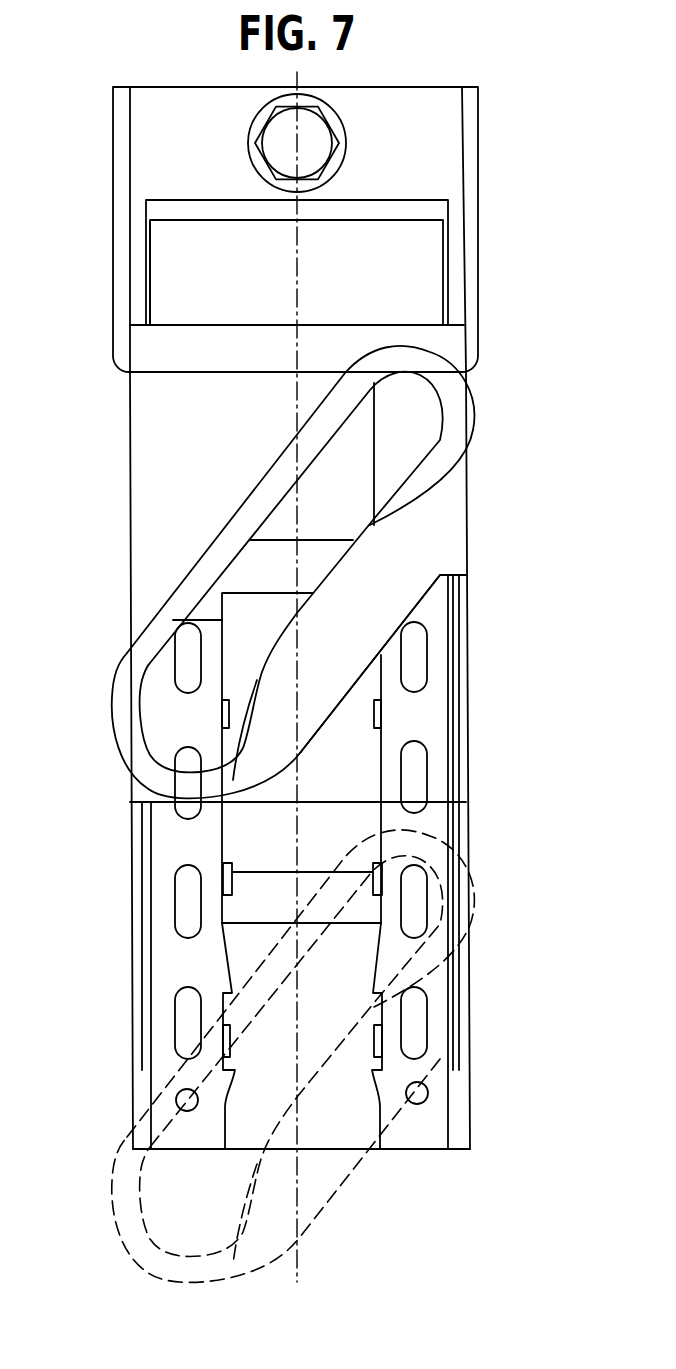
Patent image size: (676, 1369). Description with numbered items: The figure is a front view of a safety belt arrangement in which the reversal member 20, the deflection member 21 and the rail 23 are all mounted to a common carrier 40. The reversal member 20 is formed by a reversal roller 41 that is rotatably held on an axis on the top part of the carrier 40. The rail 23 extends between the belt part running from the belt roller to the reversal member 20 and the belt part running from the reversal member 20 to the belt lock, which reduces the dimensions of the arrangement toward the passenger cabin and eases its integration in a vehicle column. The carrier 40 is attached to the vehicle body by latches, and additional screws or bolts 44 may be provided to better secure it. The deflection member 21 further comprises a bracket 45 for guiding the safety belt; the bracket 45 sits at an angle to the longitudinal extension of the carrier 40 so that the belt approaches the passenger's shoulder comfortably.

The reversal member 20 is at (188, 248).
The deflection member 21 is at (348, 663).
The rail 23 is at (442, 818).
The carrier 40 is at (492, 305).
The reversal roller 41 is at (407, 245).
The bolt 44 is at (307, 133).
The bracket 45 is at (126, 708).